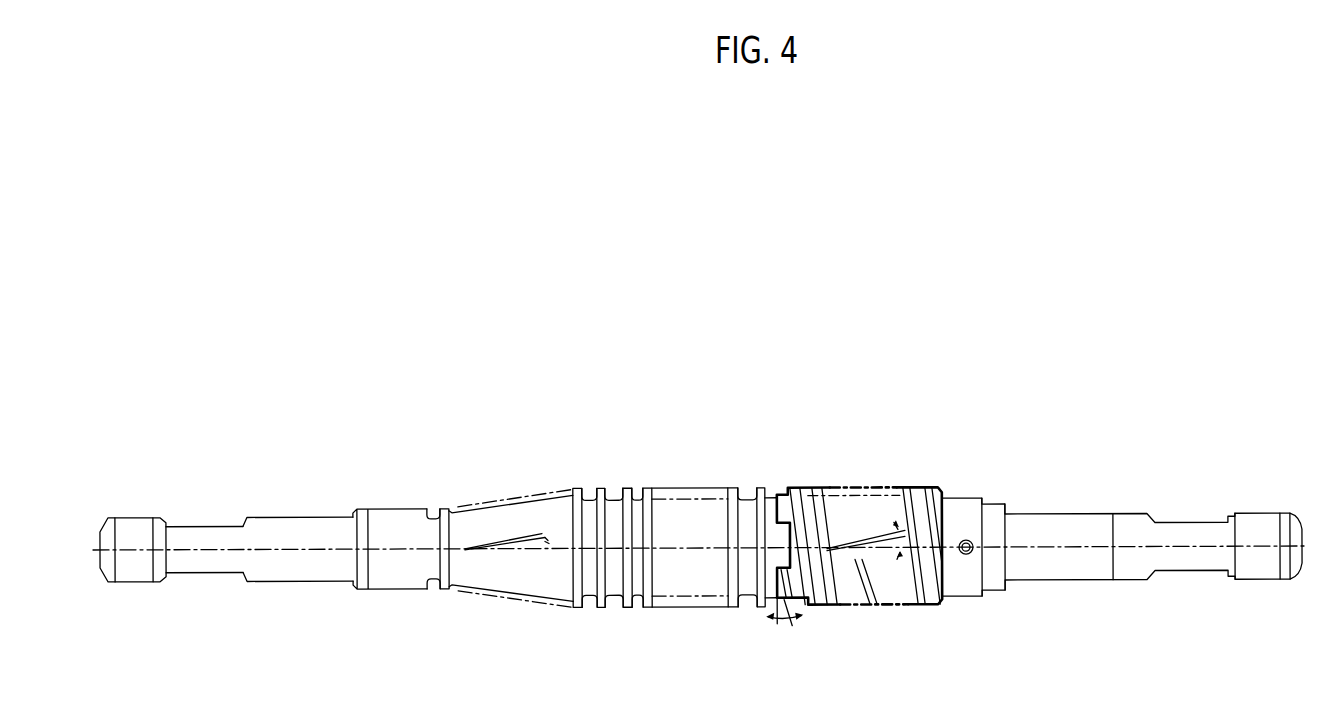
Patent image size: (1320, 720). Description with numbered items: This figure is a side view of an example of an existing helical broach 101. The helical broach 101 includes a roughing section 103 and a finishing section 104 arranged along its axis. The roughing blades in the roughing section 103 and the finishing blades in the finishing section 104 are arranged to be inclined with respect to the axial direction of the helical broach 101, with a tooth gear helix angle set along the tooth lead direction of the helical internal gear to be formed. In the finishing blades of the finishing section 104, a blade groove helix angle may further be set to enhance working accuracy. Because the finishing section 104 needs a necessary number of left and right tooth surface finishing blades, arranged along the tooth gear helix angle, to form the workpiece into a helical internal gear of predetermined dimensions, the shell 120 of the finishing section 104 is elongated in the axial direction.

The helical broach 101 is at (698, 485).
The roughing section 103 is at (513, 485).
The finishing section 104 is at (864, 476).
The shell 120 is at (878, 583).